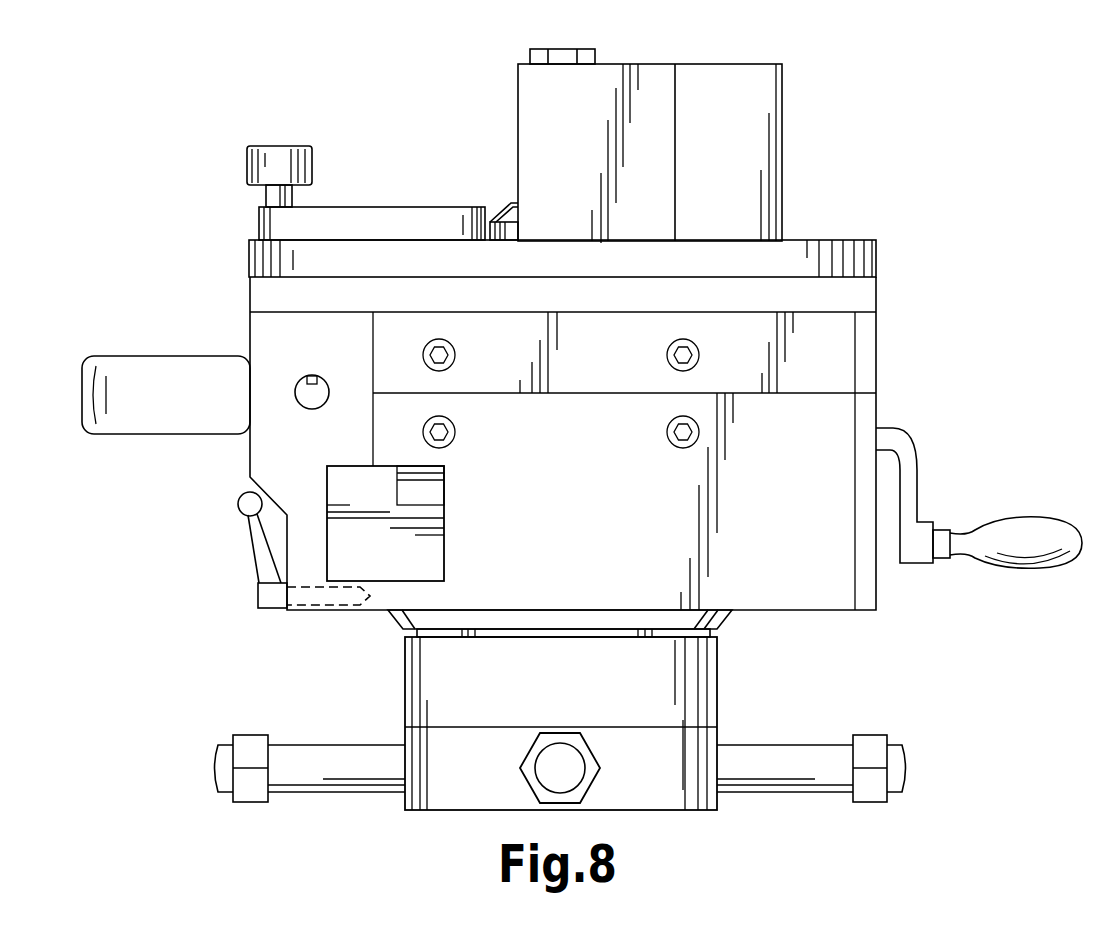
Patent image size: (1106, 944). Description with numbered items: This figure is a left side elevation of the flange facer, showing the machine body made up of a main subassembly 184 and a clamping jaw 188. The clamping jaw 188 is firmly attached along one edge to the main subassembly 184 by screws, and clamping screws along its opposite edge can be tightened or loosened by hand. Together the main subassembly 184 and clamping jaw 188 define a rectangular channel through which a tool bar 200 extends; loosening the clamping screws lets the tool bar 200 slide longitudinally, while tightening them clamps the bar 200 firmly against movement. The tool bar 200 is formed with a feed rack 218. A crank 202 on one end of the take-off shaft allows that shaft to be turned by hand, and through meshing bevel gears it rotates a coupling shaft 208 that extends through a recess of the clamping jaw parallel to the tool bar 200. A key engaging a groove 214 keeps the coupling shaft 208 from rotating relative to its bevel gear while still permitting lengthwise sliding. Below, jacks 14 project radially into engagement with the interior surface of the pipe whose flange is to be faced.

The jacks 14 is at (676, 800).
The main subassembly 184 is at (877, 348).
The clamping jaw 188 is at (262, 450).
The tool bar 200 is at (431, 523).
The crank 202 is at (1026, 518).
The coupling shaft 208 is at (305, 390).
The groove 214 is at (316, 376).
The feed rack 218 is at (437, 492).